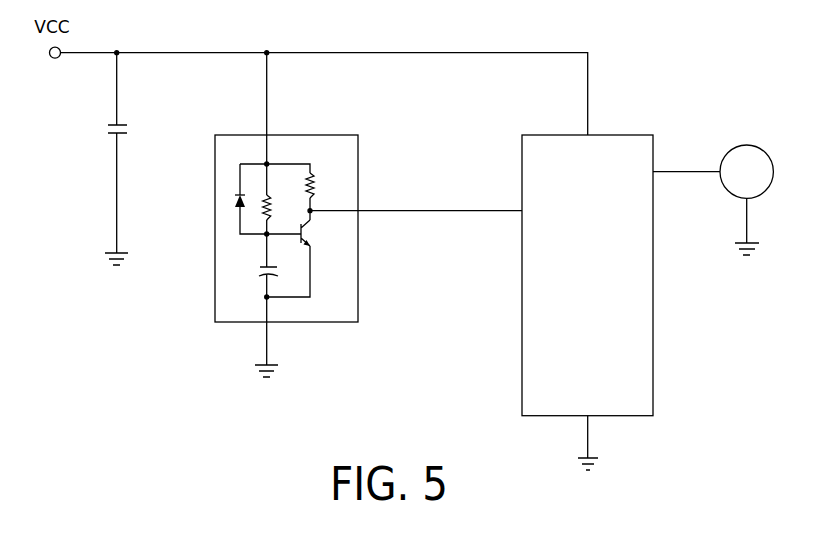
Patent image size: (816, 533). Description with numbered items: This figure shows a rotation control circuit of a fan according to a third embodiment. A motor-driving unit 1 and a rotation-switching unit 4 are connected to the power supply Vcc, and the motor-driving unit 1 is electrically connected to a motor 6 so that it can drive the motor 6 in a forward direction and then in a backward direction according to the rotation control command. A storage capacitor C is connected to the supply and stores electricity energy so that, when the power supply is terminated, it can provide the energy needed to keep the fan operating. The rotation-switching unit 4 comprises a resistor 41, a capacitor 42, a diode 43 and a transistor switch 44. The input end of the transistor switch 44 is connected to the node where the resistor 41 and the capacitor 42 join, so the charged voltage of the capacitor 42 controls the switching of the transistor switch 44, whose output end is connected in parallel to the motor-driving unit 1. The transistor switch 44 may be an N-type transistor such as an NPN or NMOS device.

The motor-driving unit 1 is at (530, 368).
The rotation-switching unit 4 is at (339, 219).
The resistor 41 is at (270, 198).
The capacitor 42 is at (262, 267).
The diode 43 is at (233, 198).
The transistor switch 44 is at (305, 228).
The motor 6 is at (733, 147).
The storage capacitor C is at (108, 159).